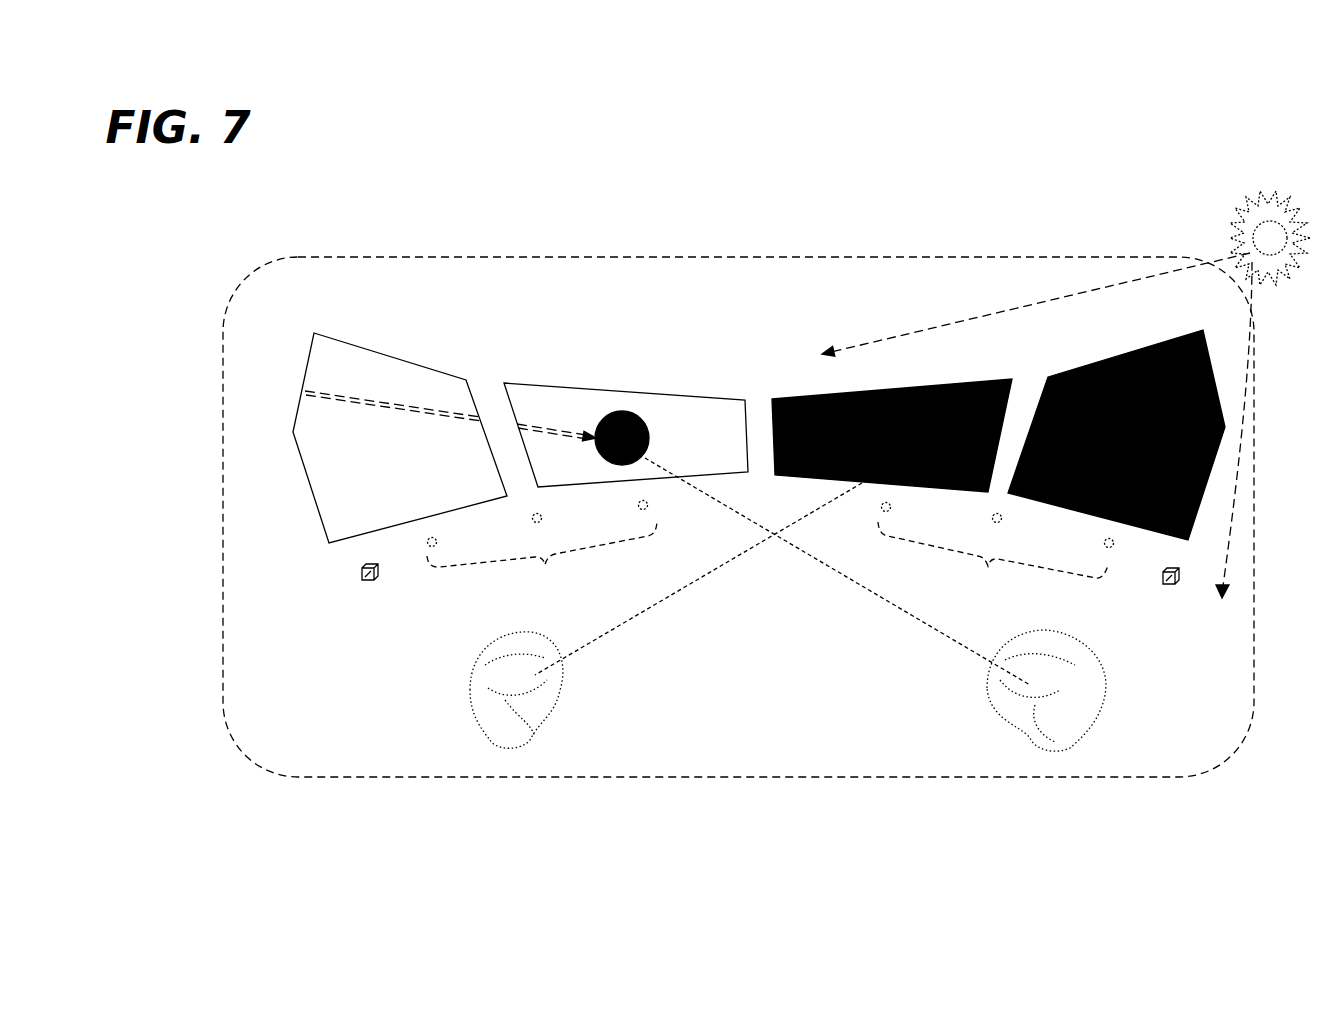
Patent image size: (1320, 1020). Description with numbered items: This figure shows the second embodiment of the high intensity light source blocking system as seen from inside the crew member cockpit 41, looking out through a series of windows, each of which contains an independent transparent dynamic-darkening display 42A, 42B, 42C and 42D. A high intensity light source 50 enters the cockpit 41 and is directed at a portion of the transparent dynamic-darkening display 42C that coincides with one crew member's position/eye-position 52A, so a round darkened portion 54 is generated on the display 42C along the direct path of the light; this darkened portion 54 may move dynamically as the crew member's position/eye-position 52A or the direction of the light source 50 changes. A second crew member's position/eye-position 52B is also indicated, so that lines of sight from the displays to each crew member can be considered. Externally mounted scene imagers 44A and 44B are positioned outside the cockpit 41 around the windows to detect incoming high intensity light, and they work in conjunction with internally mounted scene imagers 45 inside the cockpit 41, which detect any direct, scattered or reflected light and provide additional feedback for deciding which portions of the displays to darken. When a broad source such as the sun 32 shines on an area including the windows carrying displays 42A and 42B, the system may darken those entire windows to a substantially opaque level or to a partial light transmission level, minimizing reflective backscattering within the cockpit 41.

The cockpit 41 is at (307, 292).
The sun 32 is at (1270, 238).
The transparent dynamic-darkening display 42A is at (1052, 372).
The transparent dynamic-darkening display 42B is at (923, 385).
The transparent dynamic-darkening display 42C is at (519, 395).
The transparent dynamic-darkening display 42D is at (413, 377).
The externally mounted scene imagers 44A is at (542, 550).
The externally mounted scene imagers 44B is at (996, 552).
The internally mounted scene imagers 45 is at (360, 581).
The high intensity light source 50 is at (345, 398).
The crew member position/eye-position 52A is at (837, 572).
The line of sight 52B is at (707, 573).
The darkened portion 54 is at (620, 410).